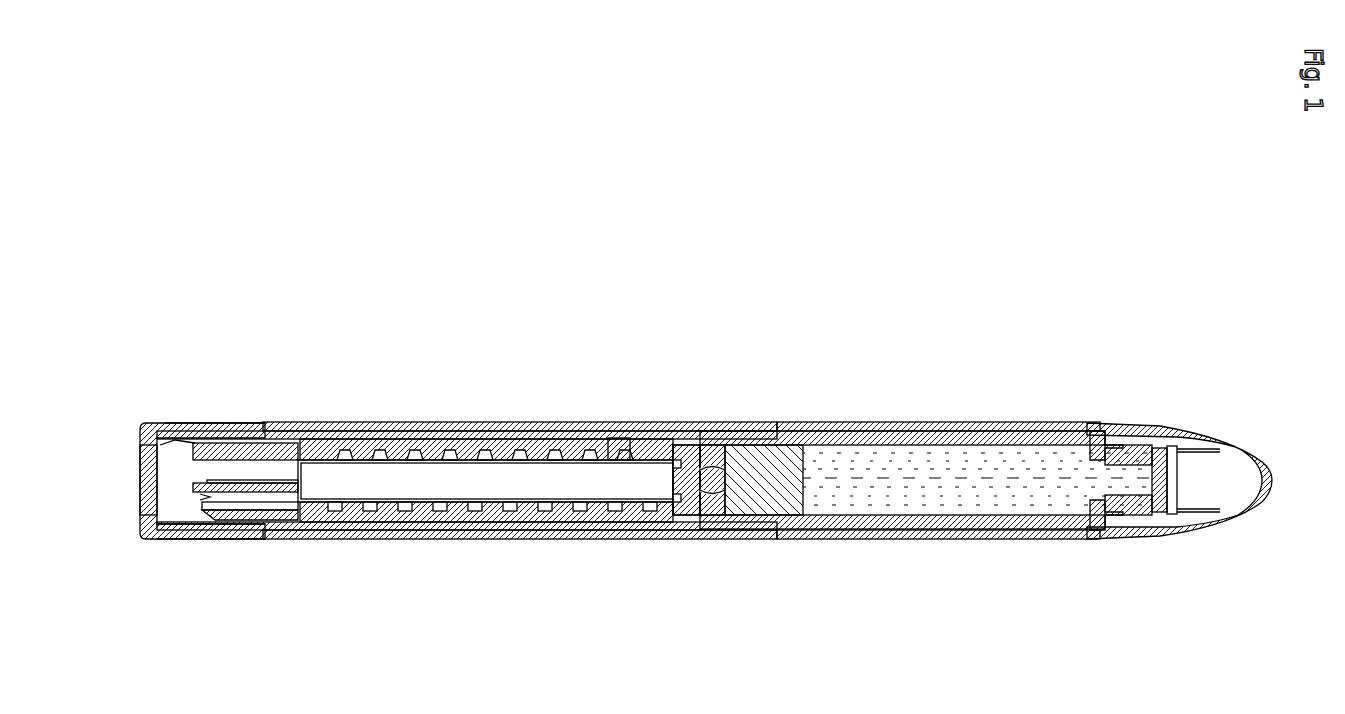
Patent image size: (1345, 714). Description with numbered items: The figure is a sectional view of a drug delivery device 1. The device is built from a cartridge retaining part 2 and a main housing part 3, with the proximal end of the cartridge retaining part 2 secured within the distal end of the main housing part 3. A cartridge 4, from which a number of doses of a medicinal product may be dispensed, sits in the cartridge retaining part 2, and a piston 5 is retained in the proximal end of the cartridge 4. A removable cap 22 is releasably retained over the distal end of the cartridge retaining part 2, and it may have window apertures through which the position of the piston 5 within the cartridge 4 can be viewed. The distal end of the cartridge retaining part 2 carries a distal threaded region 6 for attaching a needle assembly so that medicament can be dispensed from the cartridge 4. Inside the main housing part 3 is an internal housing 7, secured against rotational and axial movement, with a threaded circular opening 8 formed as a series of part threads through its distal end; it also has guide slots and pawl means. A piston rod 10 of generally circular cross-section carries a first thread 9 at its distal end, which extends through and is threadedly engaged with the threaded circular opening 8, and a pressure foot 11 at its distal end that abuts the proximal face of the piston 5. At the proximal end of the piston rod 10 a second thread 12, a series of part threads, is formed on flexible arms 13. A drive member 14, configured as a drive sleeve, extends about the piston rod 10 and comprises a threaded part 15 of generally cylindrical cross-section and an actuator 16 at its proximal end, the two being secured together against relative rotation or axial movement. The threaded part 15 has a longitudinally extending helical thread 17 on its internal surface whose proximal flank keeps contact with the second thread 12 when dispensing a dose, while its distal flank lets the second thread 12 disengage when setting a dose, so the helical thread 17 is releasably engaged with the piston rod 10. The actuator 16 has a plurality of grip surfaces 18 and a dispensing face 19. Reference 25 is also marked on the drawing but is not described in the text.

The drug delivery device 1 is at (410, 300).
The cartridge retaining part 2 is at (1105, 527).
The main housing part 3 is at (563, 430).
The cartridge 4 is at (1020, 440).
The piston 5 is at (755, 490).
The distal threaded region 6 is at (1160, 520).
The internal housing 7 is at (690, 450).
The threaded circular opening 8 is at (653, 458).
The first thread 9 is at (626, 455).
The piston rod 10 is at (492, 470).
The pressure foot 11 is at (705, 520).
The second thread 12 is at (212, 445).
The flexible arms 13 is at (250, 455).
The drive member 14 is at (197, 422).
The threaded part 15 is at (375, 440).
The actuator 16 is at (160, 432).
The helical thread 17 is at (312, 440).
The grip surfaces 18 is at (213, 540).
The dispensing face 19 is at (150, 500).
The removable cap 22 is at (1148, 430).
The cartridge holder 25 is at (920, 430).